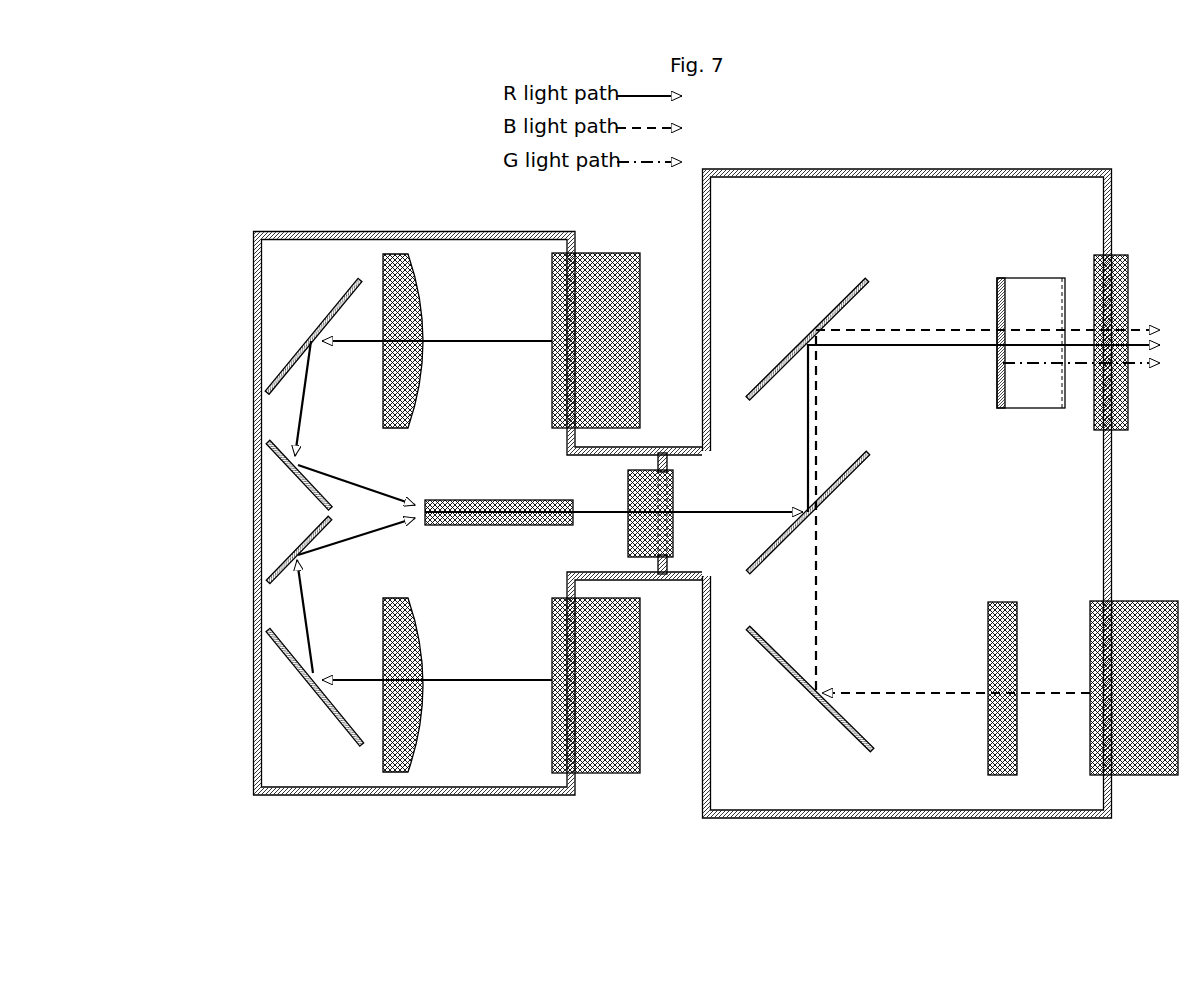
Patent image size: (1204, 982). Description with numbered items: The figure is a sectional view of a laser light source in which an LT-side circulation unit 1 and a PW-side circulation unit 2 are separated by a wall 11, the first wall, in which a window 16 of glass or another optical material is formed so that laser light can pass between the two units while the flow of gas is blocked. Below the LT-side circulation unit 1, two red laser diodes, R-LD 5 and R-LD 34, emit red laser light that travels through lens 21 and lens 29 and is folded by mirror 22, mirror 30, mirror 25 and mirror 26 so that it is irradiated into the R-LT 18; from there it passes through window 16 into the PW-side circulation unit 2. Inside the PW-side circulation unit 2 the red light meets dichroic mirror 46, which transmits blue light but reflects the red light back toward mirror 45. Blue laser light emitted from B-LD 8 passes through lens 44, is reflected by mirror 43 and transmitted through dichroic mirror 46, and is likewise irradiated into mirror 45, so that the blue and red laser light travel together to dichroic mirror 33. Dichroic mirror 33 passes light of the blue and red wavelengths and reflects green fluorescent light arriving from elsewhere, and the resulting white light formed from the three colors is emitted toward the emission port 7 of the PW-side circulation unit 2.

The LT-side circulation unit 1 is at (357, 253).
The PW-side circulation unit 2 is at (1048, 203).
The R-LD 5 is at (597, 685).
The emission port 7 is at (1128, 260).
The B-LD 8 is at (1137, 690).
The wall 11 is at (665, 462).
The window 16 is at (650, 560).
The R-LT 18 is at (517, 502).
The lens 21 is at (393, 765).
The mirror 22 is at (272, 643).
The mirror 25 is at (272, 565).
The mirror 26 is at (270, 450).
The lens 29 is at (403, 253).
The mirror 30 is at (286, 357).
The dichroic mirror 33 is at (997, 300).
The R-LD 34 is at (585, 327).
The mirror 43 is at (840, 720).
The lens 44 is at (987, 738).
The mirror 45 is at (777, 365).
The dichroic mirror 46 is at (845, 481).